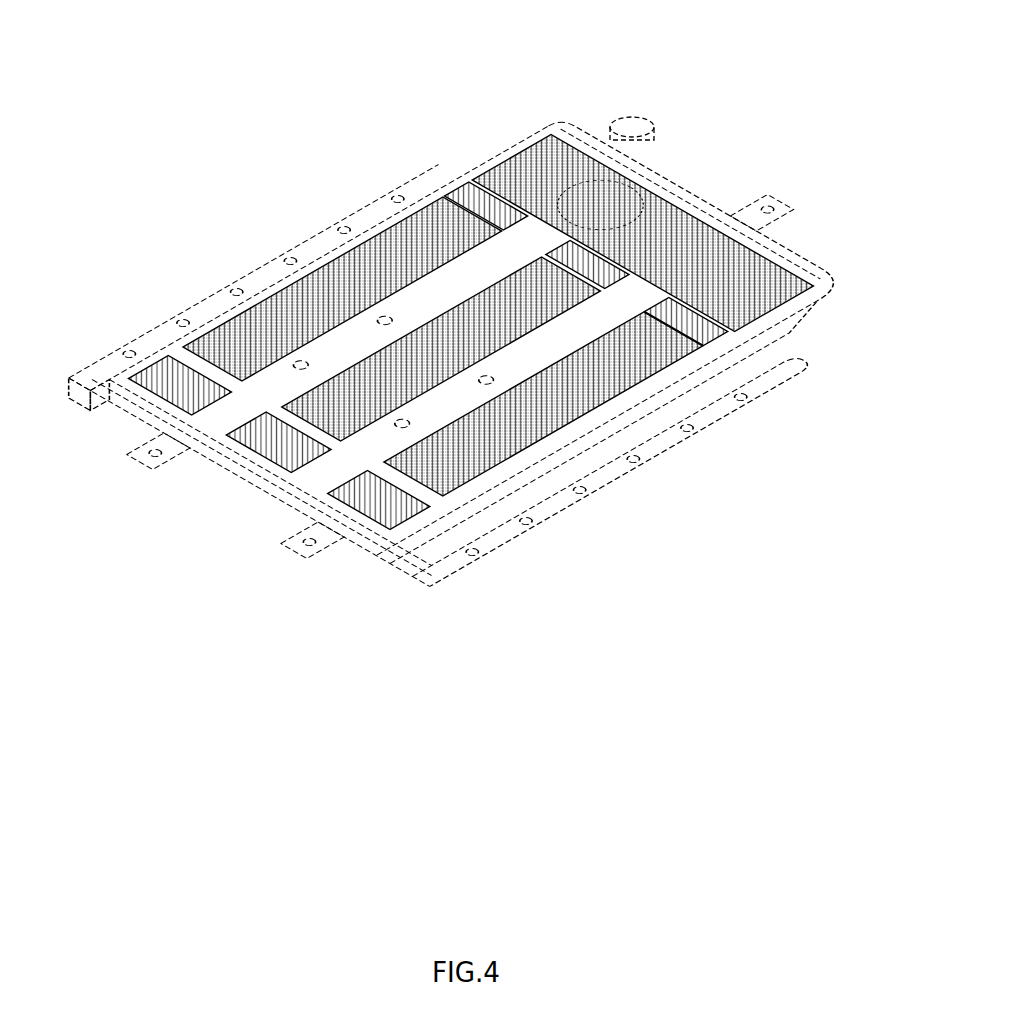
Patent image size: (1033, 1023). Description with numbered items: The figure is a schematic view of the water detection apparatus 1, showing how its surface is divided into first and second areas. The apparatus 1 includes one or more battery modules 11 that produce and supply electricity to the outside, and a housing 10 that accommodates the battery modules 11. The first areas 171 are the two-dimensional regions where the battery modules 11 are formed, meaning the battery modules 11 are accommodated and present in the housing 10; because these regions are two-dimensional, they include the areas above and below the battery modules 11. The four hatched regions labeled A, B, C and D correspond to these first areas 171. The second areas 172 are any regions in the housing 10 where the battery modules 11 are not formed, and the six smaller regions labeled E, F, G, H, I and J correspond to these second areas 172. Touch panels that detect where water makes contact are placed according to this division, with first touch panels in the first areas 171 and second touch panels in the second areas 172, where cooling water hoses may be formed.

The water detection apparatus 1 is at (641, 84).
The housing 10 is at (770, 196).
The battery module 11 is at (515, 148).
The first area 171 is at (757, 277).
The second area 172 is at (697, 335).